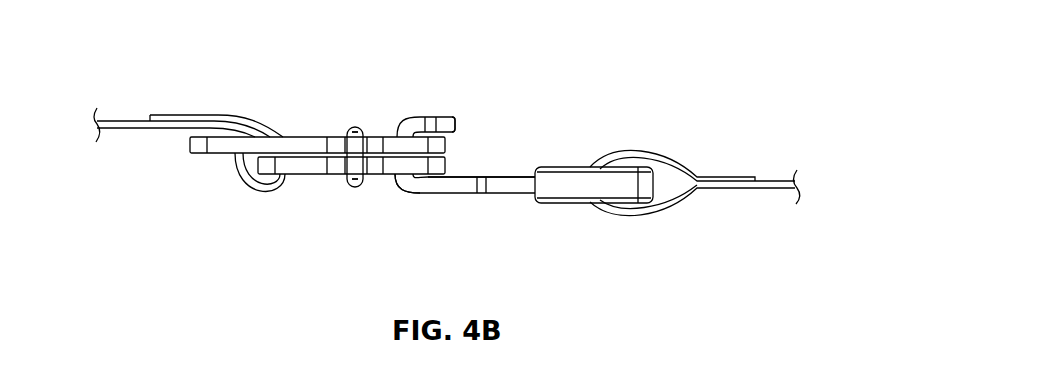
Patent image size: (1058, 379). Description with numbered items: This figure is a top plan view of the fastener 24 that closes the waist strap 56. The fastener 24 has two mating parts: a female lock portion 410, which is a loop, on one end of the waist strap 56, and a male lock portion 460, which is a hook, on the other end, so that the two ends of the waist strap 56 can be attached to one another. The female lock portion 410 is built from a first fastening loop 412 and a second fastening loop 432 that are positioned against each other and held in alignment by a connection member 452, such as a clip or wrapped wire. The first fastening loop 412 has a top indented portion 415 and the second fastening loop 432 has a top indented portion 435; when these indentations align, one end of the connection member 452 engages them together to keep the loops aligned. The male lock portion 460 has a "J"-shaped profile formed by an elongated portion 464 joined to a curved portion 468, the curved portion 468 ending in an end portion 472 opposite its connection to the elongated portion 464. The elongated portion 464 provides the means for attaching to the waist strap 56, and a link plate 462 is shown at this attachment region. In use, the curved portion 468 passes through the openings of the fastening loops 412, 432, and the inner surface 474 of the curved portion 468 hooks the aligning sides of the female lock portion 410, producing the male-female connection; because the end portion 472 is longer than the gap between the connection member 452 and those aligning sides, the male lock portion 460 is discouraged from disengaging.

The waist strap 56 is at (118, 118).
The female lock portion 410 is at (455, 52).
The first fastening loop 412 is at (190, 140).
The top indented portion 415 is at (347, 128).
The second fastening loop 432 is at (303, 170).
The top indented portion 435 is at (345, 175).
The connection member 452 is at (355, 127).
The inner surface 474 is at (431, 117).
The end portion 472 is at (457, 126).
The link plate 462 is at (428, 193).
The curved portion 468 is at (397, 188).
The elongated portion 464 is at (468, 177).
The male lock portion 460 is at (513, 192).
The fastener 24 is at (653, 237).